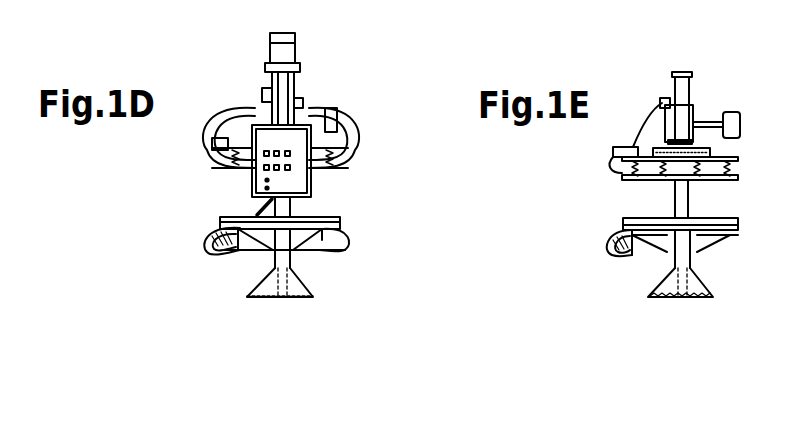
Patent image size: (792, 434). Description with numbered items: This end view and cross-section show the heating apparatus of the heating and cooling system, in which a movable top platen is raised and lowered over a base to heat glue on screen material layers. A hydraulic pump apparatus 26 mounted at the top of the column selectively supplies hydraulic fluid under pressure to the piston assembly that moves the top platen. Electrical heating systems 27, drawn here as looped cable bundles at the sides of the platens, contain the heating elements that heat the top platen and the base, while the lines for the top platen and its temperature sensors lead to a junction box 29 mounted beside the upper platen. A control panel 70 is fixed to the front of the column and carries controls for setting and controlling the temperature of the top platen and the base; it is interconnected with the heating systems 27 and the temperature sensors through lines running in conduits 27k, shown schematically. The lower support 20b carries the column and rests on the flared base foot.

In FIG. 1D, the hydraulic pump apparatus 26 is at (287, 53).
In FIG. 1D, the control panel 70 is at (300, 132).
In FIG. 1D, the junction box 29 is at (217, 157).
In FIG. 1E, the junction box 29 is at (630, 147).
In FIG. 1D, the conduits 27k is at (238, 137).
In FIG. 1D, the electrical heating systems 27 is at (230, 253).
In FIG. 1E, the electrical heating systems 27 is at (632, 255).
In FIG. 1D, the support column base 20b is at (286, 254).